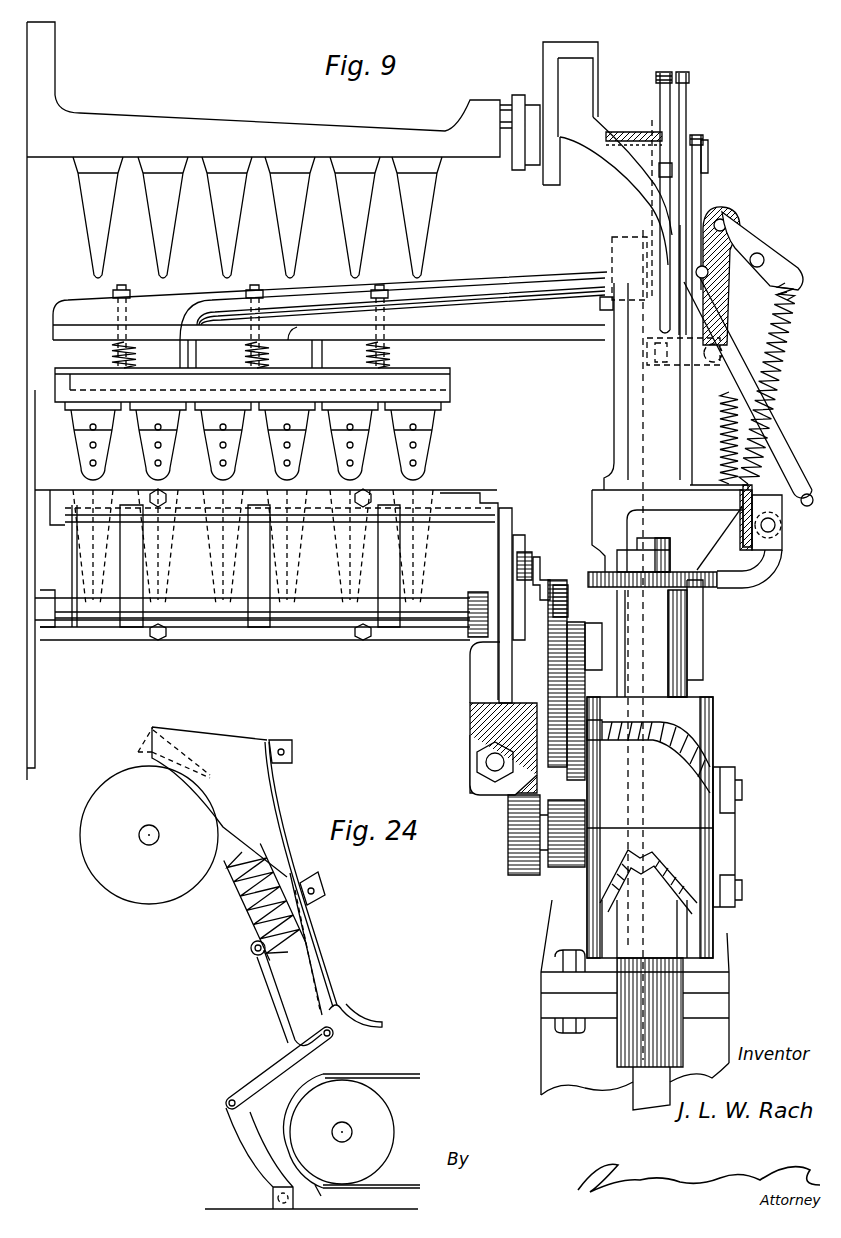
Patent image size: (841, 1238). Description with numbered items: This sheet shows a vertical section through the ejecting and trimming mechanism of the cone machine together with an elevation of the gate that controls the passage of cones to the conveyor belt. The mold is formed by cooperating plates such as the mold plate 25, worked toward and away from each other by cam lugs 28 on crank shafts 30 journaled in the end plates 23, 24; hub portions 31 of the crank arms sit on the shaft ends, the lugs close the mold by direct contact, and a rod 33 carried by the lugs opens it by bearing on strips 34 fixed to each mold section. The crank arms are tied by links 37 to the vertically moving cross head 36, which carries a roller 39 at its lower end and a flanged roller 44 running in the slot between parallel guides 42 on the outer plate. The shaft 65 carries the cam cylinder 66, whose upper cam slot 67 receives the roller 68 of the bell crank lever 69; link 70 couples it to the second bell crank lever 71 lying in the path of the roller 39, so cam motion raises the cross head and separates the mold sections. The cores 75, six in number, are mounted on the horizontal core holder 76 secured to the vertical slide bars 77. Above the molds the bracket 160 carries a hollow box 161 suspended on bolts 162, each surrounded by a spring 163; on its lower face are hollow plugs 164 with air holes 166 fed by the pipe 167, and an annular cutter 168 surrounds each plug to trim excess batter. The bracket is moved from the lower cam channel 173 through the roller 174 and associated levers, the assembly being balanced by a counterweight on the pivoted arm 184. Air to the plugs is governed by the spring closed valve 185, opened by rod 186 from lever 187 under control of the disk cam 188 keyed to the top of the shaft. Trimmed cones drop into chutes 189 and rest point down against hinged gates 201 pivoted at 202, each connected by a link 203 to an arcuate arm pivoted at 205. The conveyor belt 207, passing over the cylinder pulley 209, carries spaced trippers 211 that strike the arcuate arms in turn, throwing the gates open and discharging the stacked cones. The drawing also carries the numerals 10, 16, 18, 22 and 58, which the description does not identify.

In FIG. 9, the base frame 10 is at (608, 997).
In FIG. 9, the bracket block 16 is at (470, 722).
In FIG. 9, the gear 18 is at (523, 805).
In FIG. 9, the frame arm 22 is at (470, 643).
In FIG. 9, the end plate 23 is at (487, 694).
In FIG. 9, the end plate 24 is at (40, 707).
In FIG. 9, the mold plate 25 is at (222, 630).
In FIG. 9, the cam lug 28 is at (397, 567).
In FIG. 9, the crank shaft 30 is at (322, 620).
In FIG. 9, the hub portion 31 is at (520, 603).
In FIG. 9, the rod 33 is at (330, 524).
In FIG. 9, the strip 34 is at (358, 586).
In FIG. 9, the cross head 36 is at (537, 558).
In FIG. 9, the link 37 is at (525, 552).
In FIG. 9, the roller 39 is at (558, 584).
In FIG. 9, the parallel guide 42 is at (512, 509).
In FIG. 9, the flanged roller 44 is at (503, 553).
In FIG. 9, the stop block 58 is at (745, 530).
In FIG. 9, the shaft 65 is at (640, 1077).
In FIG. 9, the cam cylinder 66 is at (650, 853).
In FIG. 9, the cam slot 67 is at (692, 747).
In FIG. 9, the roller 68 is at (595, 732).
In FIG. 9, the bell crank lever 69 is at (583, 693).
In FIG. 9, the link 70 is at (596, 618).
In FIG. 9, the second bell crank lever 71 is at (557, 670).
In FIG. 9, the core 75 is at (282, 227).
In FIG. 9, the core holder 76 is at (266, 134).
In FIG. 9, the vertical slide bar 77 is at (27, 227).
In FIG. 9, the bracket 160 is at (479, 276).
In FIG. 9, the hollow box 161 is at (448, 402).
In FIG. 9, the bolt 162 is at (257, 286).
In FIG. 9, the spring 163 is at (404, 358).
In FIG. 9, the hollow plug 164 is at (424, 454).
In FIG. 9, the air hole 166 is at (428, 438).
In FIG. 9, the pipe 167 is at (306, 352).
In FIG. 9, the annular cutter 168 is at (342, 406).
In FIG. 9, the lower cam channel 173 is at (660, 877).
In FIG. 9, the roller 174 is at (703, 913).
In FIG. 9, the pivoted arm 184 is at (680, 207).
In FIG. 9, the spring closed valve 185 is at (727, 300).
In FIG. 9, the rod 186 is at (782, 448).
In FIG. 9, the lever 187 is at (793, 537).
In FIG. 9, the disk cam 188 is at (707, 590).
In FIG. 24, the chute 189 is at (236, 910).
In FIG. 24, the hinged gate 201 is at (277, 1003).
In FIG. 24, the pivot 202 is at (253, 950).
In FIG. 24, the link 203 is at (270, 1067).
In FIG. 24, the pivot 205 is at (277, 1190).
In FIG. 24, the conveyor belt 207 is at (417, 1074).
In FIG. 24, the cylinder pulley 209 is at (394, 1134).
In FIG. 24, the tripper 211 is at (322, 1190).